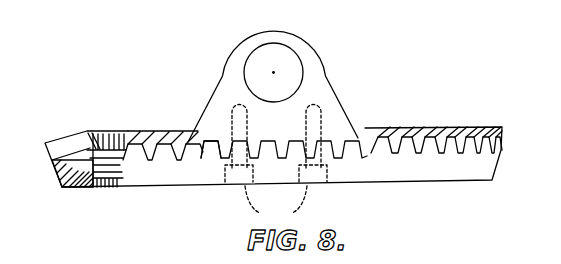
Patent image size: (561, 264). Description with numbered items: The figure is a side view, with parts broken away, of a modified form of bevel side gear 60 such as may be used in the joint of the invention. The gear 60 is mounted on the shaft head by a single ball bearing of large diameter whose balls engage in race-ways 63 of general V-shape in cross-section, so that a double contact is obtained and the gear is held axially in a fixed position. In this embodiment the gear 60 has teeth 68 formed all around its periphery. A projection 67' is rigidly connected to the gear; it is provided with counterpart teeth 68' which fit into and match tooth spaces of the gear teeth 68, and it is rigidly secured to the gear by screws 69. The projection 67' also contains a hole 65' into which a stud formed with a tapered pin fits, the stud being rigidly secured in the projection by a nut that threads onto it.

The bevel side gear 60 is at (420, 172).
The race-ways 63 is at (108, 188).
The hole 65' is at (302, 64).
The projection 67' is at (281, 86).
The teeth 68 is at (436, 123).
The counterpart teeth 68' is at (207, 183).
The screws 69 is at (276, 164).